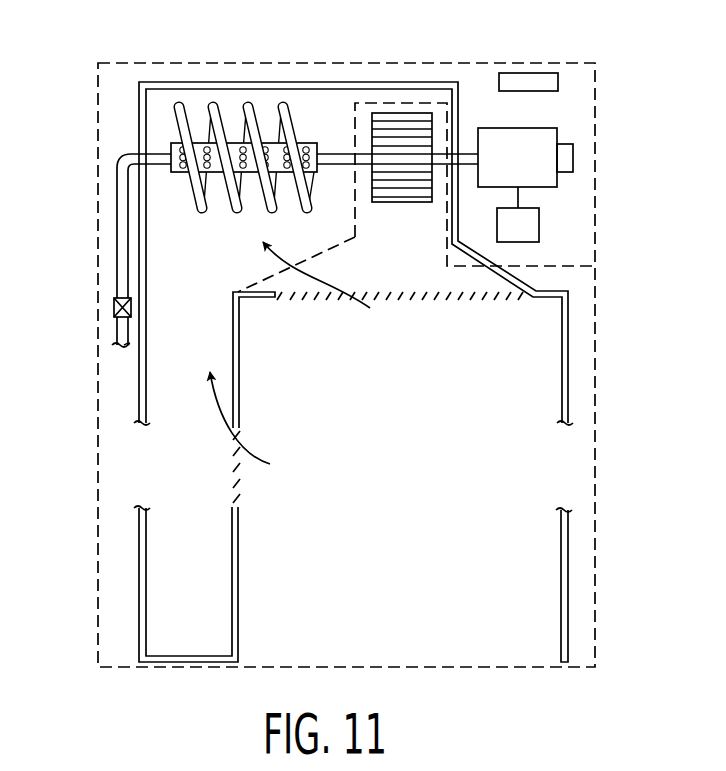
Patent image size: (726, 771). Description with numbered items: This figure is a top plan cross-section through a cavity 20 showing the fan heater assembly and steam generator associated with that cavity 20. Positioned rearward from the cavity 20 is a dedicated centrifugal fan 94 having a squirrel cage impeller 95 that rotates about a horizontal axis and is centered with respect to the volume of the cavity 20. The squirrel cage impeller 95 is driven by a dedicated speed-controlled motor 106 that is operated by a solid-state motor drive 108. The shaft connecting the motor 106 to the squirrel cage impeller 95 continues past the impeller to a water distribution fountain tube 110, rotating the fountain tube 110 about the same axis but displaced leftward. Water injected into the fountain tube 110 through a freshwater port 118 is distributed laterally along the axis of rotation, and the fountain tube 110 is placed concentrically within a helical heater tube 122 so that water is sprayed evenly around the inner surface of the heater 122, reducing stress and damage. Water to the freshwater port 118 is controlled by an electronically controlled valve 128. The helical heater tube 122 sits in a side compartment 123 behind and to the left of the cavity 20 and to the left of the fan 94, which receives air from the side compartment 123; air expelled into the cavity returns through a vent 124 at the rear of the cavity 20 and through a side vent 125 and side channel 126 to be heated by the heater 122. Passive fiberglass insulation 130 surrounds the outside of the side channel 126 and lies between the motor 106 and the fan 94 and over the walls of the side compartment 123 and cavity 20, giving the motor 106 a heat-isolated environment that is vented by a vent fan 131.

The cavity 20 is at (427, 540).
The fan 94 is at (374, 102).
The squirrel cage impeller 95 is at (402, 130).
The speed-controlled motor 106 is at (550, 135).
The solid-state motor drive 108 is at (525, 226).
The water distribution fountain tube 110 is at (263, 118).
The freshwater port 118 is at (122, 162).
The helical heater tube 122 is at (183, 110).
The side compartment 123 is at (162, 98).
The vent 124 is at (456, 303).
The side vent 125 is at (245, 485).
The side channel 126 is at (173, 567).
The electronically controlled valve 128 is at (114, 306).
The fiberglass insulation 130 is at (140, 467).
The vent fan 131 is at (532, 83).